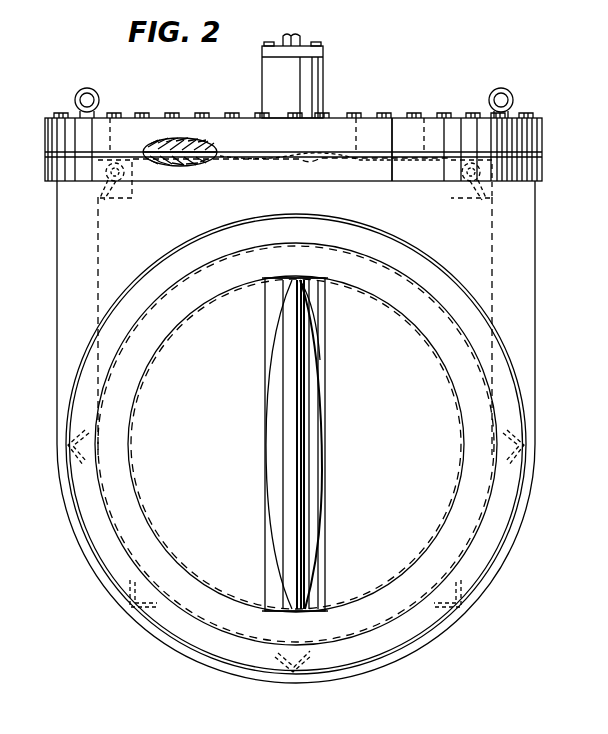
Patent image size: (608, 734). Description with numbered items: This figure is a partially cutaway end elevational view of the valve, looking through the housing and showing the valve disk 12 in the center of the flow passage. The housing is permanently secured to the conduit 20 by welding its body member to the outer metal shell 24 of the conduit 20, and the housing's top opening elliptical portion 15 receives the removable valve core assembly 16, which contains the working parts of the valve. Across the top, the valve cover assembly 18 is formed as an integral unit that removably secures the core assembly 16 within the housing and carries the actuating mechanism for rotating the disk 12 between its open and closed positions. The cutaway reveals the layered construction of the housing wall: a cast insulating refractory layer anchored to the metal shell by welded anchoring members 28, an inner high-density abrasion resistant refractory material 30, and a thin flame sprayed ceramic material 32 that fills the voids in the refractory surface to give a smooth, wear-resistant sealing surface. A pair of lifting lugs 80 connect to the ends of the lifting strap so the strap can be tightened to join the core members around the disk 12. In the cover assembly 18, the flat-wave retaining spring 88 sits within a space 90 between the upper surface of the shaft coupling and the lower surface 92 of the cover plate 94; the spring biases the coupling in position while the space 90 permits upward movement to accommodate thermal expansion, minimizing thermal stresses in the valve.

The valve disk 12 is at (270, 388).
The top opening elliptical portion 15 is at (68, 206).
The valve core assembly 16 is at (492, 260).
The valve cover assembly 18 is at (158, 117).
The conduit 20 is at (0, 522).
The outer metal shell of conduit 24 is at (0, 496).
The welded anchoring members 28 is at (276, 676).
The abrasion resistant refractory material 30 is at (248, 444).
The flame sprayed ceramic material 32 is at (232, 444).
The lifting lugs 80 is at (97, 161).
The flat-wave retaining spring 88 is at (181, 150).
The space 90 is at (308, 154).
The lower surface of cover plate 92 is at (331, 158).
The cover plate 94 is at (420, 130).